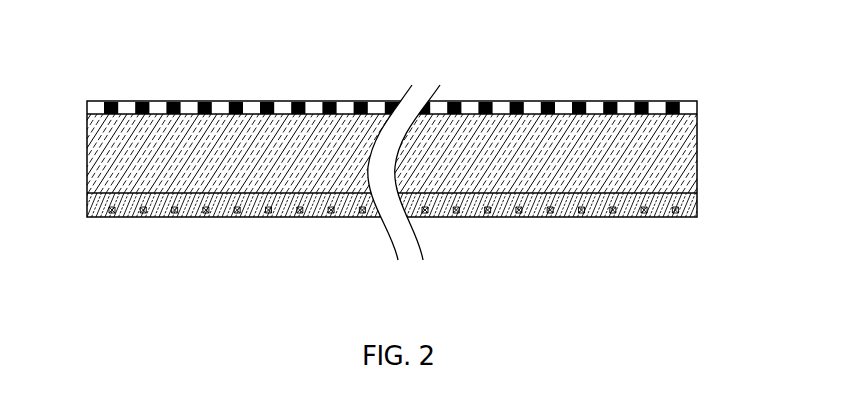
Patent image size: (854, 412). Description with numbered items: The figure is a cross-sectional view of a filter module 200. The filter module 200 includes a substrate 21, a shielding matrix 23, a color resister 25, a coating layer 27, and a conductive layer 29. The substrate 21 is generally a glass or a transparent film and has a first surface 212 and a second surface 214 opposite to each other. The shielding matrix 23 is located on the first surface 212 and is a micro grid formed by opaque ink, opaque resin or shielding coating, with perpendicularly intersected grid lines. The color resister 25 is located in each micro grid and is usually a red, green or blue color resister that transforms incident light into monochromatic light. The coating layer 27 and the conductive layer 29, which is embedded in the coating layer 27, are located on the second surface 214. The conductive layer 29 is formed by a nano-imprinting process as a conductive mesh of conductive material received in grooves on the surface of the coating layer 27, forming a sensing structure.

The filter module 200 is at (102, 56).
The substrate 21 is at (673, 173).
The first surface 212 is at (123, 115).
The second surface 214 is at (152, 190).
The shielding matrix 23 is at (156, 100).
The color resister 25 is at (188, 101).
The coating layer 27 is at (698, 203).
The conductive layer 29 is at (655, 215).